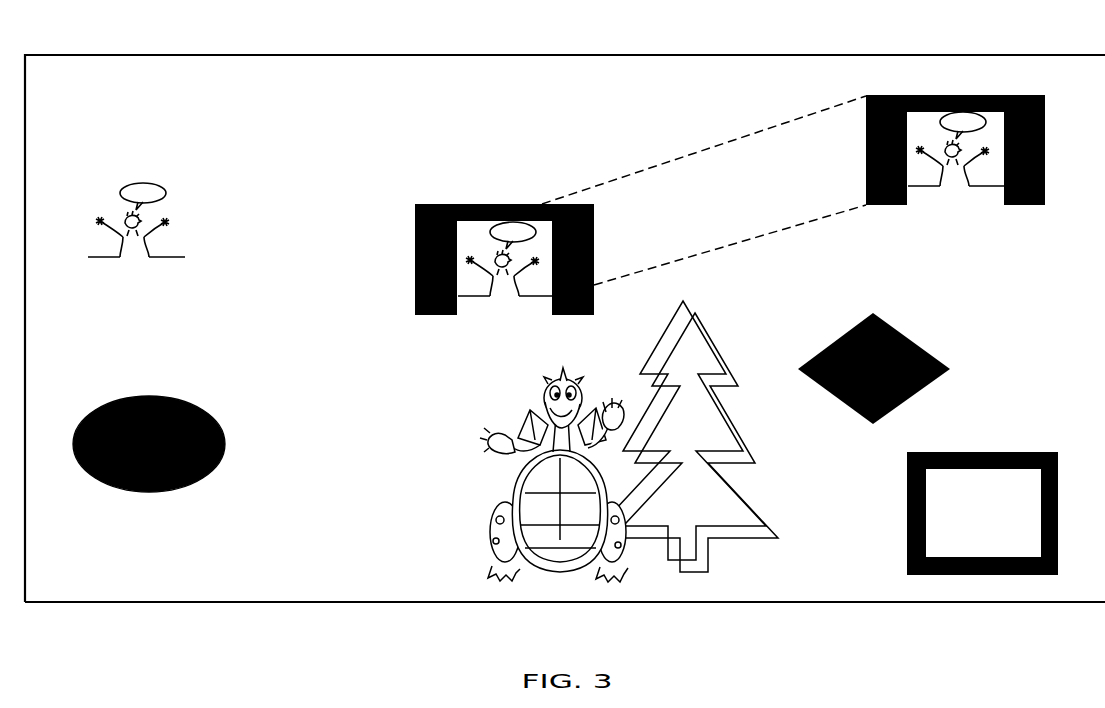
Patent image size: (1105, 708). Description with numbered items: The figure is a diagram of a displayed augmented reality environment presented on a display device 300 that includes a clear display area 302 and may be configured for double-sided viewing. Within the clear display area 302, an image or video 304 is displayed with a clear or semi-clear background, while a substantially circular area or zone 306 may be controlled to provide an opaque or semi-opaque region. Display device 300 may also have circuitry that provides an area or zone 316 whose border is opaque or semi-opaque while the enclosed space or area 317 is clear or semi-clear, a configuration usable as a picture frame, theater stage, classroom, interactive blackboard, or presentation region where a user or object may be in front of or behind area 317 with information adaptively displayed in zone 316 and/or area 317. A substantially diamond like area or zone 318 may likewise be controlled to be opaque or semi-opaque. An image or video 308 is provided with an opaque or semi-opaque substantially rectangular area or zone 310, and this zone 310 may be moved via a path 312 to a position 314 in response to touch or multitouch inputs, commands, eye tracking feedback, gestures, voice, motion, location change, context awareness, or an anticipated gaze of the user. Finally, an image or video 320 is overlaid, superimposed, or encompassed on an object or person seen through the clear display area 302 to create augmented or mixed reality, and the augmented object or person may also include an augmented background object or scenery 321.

The display device 300 is at (388, 55).
The clear display area 302 is at (251, 164).
The image or video 304 is at (103, 259).
The substantially circular area or zone 306 is at (226, 446).
The image or video 308 is at (473, 299).
The substantially rectangular area or zone 310 is at (415, 259).
The path 312 is at (737, 246).
The position 314 is at (921, 188).
The area or zone 316 is at (983, 452).
The space or area 317 is at (961, 518).
The substantially diamond like area or zone 318 is at (899, 330).
The image or video 320 is at (512, 488).
The augmented background object or scenery 321 is at (750, 507).